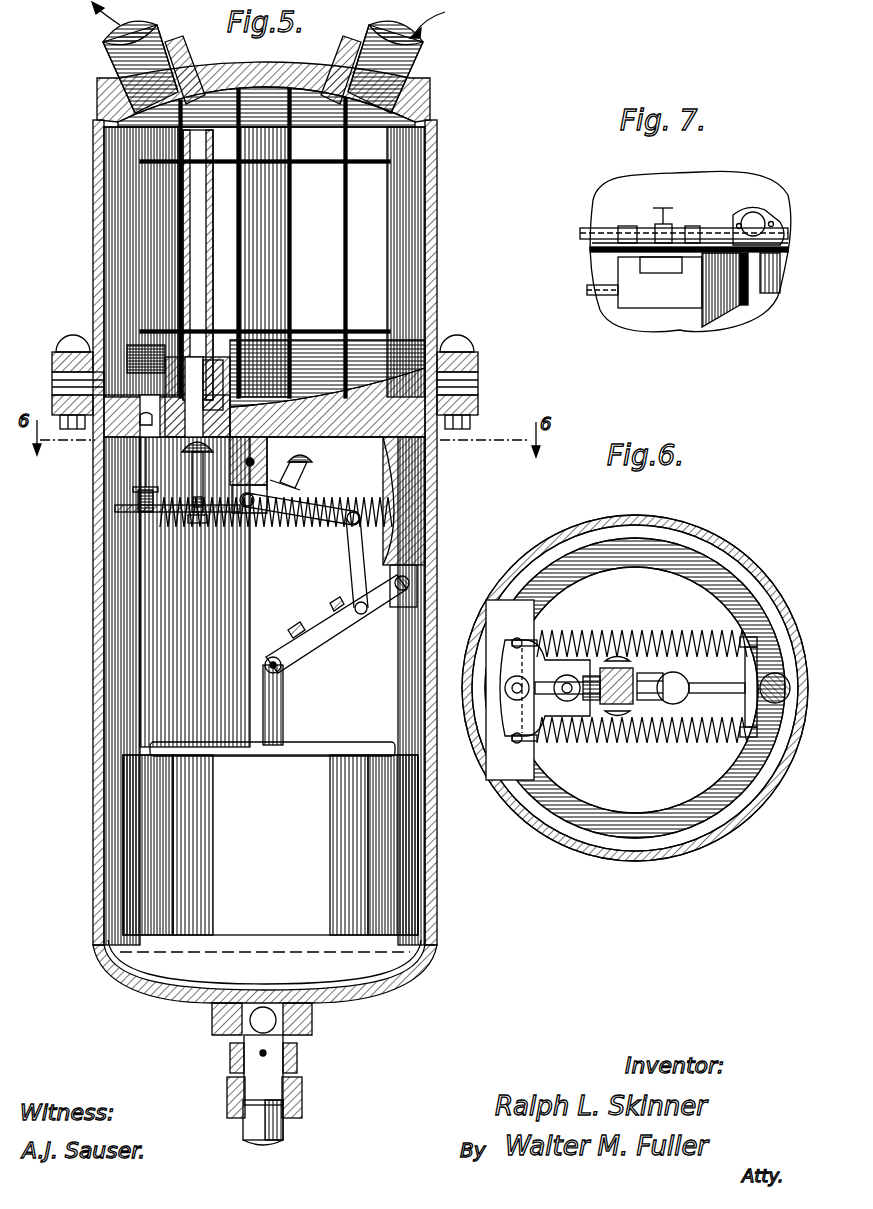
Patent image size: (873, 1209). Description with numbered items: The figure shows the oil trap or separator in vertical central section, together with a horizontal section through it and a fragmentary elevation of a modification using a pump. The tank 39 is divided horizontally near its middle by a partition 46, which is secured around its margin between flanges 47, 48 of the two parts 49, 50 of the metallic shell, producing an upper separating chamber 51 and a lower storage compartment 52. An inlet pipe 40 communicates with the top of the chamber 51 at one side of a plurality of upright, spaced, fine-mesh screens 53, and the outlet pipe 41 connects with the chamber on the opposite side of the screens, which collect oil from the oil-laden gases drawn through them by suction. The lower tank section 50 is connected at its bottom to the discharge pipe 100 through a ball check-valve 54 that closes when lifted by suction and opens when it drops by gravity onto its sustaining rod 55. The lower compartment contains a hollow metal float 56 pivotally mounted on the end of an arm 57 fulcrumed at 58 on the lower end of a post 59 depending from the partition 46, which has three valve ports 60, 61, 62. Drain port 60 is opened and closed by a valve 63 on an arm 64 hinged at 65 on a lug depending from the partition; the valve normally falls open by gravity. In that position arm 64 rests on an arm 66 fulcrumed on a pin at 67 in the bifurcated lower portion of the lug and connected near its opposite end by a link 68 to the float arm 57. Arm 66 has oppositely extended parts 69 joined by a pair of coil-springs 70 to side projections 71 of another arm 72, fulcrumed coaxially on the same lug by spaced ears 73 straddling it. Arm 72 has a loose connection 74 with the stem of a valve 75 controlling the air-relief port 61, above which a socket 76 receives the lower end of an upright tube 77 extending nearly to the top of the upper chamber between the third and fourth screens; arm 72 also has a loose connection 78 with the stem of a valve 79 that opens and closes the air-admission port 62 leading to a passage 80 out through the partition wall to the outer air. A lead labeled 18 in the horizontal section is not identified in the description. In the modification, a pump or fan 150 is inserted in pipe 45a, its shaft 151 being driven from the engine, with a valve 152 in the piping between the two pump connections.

In FIG. 5, the tank 39 is at (437, 305).
In FIG. 6, the tank 39 is at (700, 540).
In FIG. 5, the inlet pipe 40 is at (420, 40).
In FIG. 5, the outlet pipe 41 is at (120, 58).
In FIG. 7, the pipe 45a is at (584, 229).
In FIG. 5, the partition 46 is at (360, 437).
In FIG. 5, the flange 47 is at (470, 352).
In FIG. 5, the flange 48 is at (470, 420).
In FIG. 5, the upper part of the metallic shell 49 is at (437, 190).
In FIG. 5, the lower part of the metallic shell 50 is at (93, 684).
In FIG. 6, the lower part of the metallic shell 50 is at (660, 860).
In FIG. 5, the upper separating chamber 51 is at (264, 262).
In FIG. 5, the lower storage compartment 52 is at (264, 691).
In FIG. 5, the screens 53 is at (340, 178).
In FIG. 5, the ball check-valve 54 is at (245, 1030).
In FIG. 5, the sustaining rod 55 is at (268, 1053).
In FIG. 5, the float 56 is at (269, 808).
In FIG. 5, the arm 57 is at (315, 630).
In FIG. 5, the fulcrum 58 is at (402, 592).
In FIG. 5, the post 59 is at (405, 555).
In FIG. 6, the post 59 is at (777, 673).
In FIG. 5, the valve port 60 is at (290, 400).
In FIG. 5, the air-relief valve-port 61 is at (147, 460).
In FIG. 5, the air-admission valve-port 62 is at (104, 470).
In FIG. 5, the valve 63 is at (305, 465).
In FIG. 6, the valve 63 is at (672, 672).
In FIG. 5, the valve arm 64 is at (290, 525).
In FIG. 6, the valve arm 64 is at (655, 700).
In FIG. 5, the hinge 65 is at (255, 515).
In FIG. 6, the hinge 65 is at (640, 700).
In FIG. 5, the arm 66 is at (322, 520).
In FIG. 6, the arm 66 is at (707, 693).
In FIG. 5, the pin 67 is at (240, 528).
In FIG. 5, the link 68 is at (352, 575).
In FIG. 6, the link 68 is at (723, 687).
In FIG. 6, the oppositely extended parts 69 is at (740, 638).
In FIG. 5, the coil-springs 70 is at (284, 530).
In FIG. 6, the coil-springs 70 is at (580, 632).
In FIG. 6, the side projections 71 is at (519, 638).
In FIG. 5, the arm 72 is at (138, 510).
In FIG. 6, the arm 72 is at (567, 688).
In FIG. 5, the ears 73 is at (228, 530).
In FIG. 6, the ears 73 is at (622, 668).
In FIG. 5, the loose connection 74 is at (180, 513).
In FIG. 5, the valve 75 is at (192, 480).
In FIG. 6, the valve 75 is at (612, 660).
In FIG. 5, the socket 76 is at (225, 380).
In FIG. 5, the pipe or tube 77 is at (200, 285).
In FIG. 5, the loose connection 78 is at (125, 505).
In FIG. 5, the valve 79 is at (104, 445).
In FIG. 6, the valve 79 is at (510, 695).
In FIG. 5, the passage 80 is at (80, 342).
In FIG. 6, the pivot 18 is at (505, 700).
In FIG. 5, the discharge pipe 100 is at (283, 1130).
In FIG. 7, the pump or fan 150 is at (689, 285).
In FIG. 7, the shaft 151 is at (595, 305).
In FIG. 7, the valve 152 is at (668, 222).